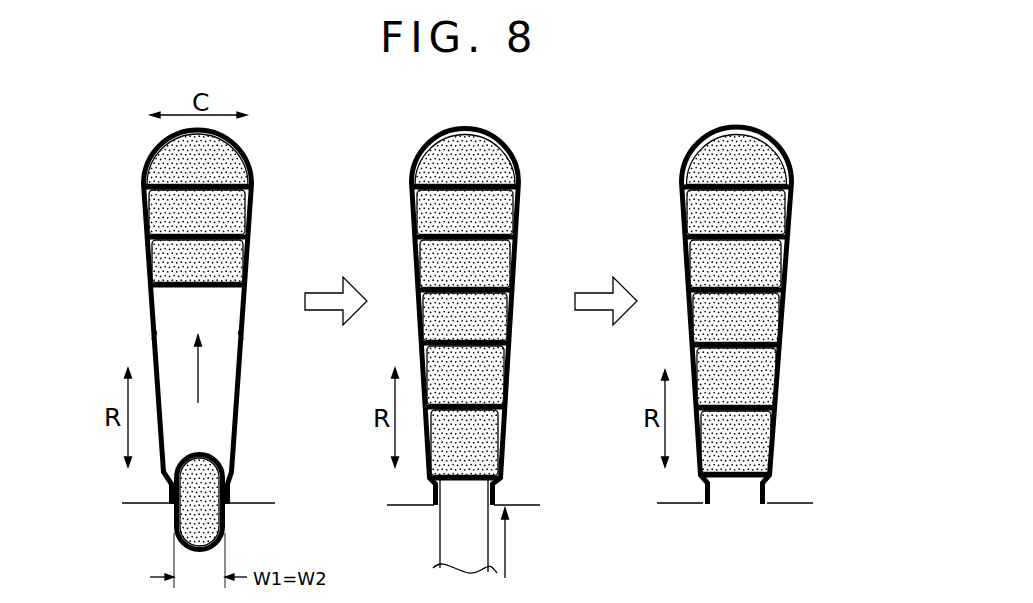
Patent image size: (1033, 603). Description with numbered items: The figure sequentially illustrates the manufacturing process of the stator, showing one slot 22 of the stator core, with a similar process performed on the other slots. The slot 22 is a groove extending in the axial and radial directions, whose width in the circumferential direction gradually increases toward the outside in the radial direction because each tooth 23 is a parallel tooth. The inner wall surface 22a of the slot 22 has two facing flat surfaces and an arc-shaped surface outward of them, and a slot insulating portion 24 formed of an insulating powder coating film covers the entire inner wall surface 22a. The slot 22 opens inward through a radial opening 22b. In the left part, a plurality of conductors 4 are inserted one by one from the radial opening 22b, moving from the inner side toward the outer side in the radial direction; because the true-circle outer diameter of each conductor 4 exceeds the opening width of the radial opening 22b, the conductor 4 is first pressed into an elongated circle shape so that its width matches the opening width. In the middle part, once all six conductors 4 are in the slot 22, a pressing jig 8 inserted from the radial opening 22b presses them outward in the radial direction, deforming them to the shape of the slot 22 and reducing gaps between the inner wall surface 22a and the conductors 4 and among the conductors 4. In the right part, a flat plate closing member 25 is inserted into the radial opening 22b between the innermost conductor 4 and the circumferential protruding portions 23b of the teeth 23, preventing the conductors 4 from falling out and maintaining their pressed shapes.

The conductor 4 is at (227, 168).
The pressing jig 8 is at (438, 531).
The slot 22 is at (172, 373).
The inner wall surface 22a is at (150, 327).
The radial opening 22b is at (210, 497).
The tooth 23 is at (793, 495).
The circumferential protruding portion 23b is at (702, 497).
The slot insulating portion 24 is at (243, 417).
The closing member 25 is at (738, 480).